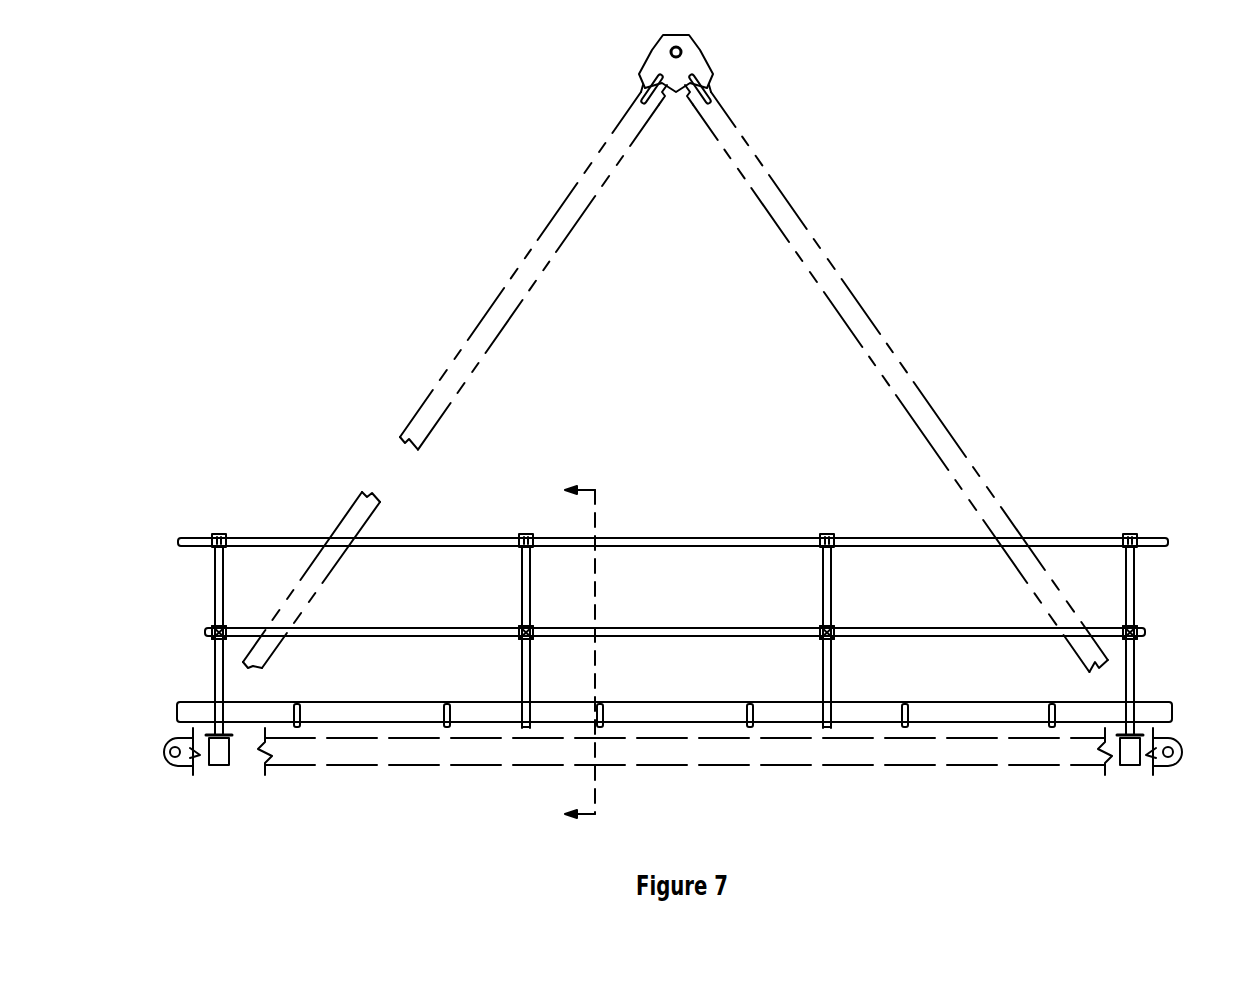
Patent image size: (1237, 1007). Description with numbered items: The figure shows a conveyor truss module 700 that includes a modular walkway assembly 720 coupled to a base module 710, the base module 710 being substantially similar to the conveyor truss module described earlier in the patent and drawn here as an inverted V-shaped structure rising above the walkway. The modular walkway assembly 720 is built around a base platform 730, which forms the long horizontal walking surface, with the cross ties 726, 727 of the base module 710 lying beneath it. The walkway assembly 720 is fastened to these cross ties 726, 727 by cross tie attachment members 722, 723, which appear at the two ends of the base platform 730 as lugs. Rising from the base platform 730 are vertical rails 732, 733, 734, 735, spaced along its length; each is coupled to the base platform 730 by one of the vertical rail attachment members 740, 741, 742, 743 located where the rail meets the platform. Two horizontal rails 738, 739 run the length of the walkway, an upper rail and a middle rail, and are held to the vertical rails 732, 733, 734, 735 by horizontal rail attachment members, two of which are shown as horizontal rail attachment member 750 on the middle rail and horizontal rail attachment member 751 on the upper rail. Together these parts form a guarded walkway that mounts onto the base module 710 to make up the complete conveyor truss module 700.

The conveyor truss module 700 is at (396, 165).
The base module 710 is at (434, 352).
The modular walkway assembly 720 is at (260, 516).
The cross tie attachment member 722 is at (212, 737).
The cross tie attachment member 723 is at (1157, 740).
The cross tie 726 is at (220, 768).
The cross tie 727 is at (1130, 768).
The base platform 730 is at (387, 708).
The vertical rail 732 is at (224, 588).
The vertical rail 733 is at (522, 590).
The vertical rail 734 is at (822, 590).
The vertical rail 735 is at (1135, 596).
The horizontal rail 738 is at (360, 626).
The horizontal rail 739 is at (432, 538).
The vertical rail attachment member 740 is at (206, 631).
The vertical rail attachment member 741 is at (532, 712).
The vertical rail attachment member 742 is at (822, 712).
The vertical rail attachment member 743 is at (1118, 712).
The horizontal rail attachment member 750 is at (532, 633).
The horizontal rail attachment member 751 is at (832, 536).